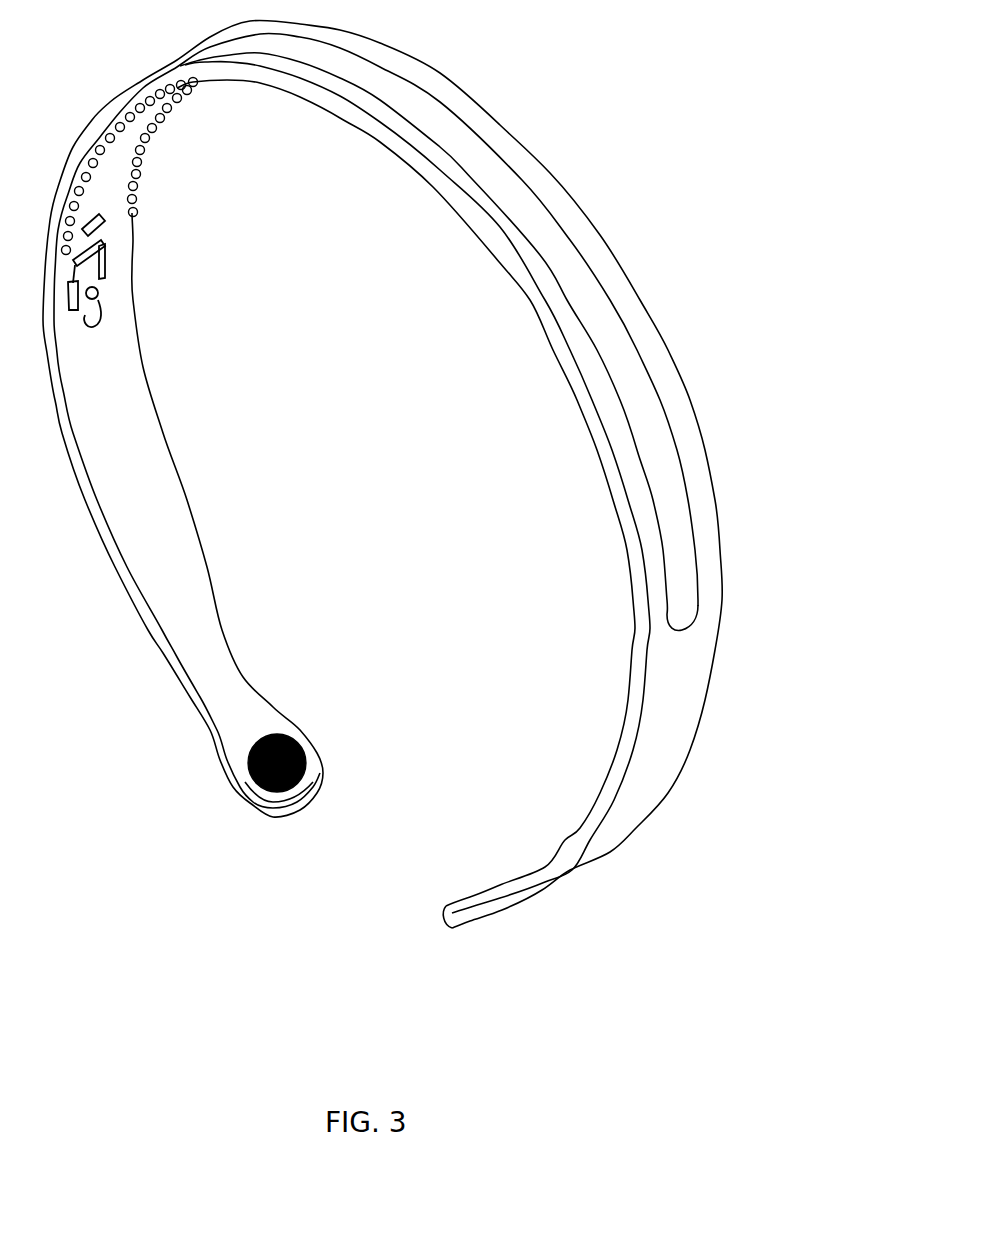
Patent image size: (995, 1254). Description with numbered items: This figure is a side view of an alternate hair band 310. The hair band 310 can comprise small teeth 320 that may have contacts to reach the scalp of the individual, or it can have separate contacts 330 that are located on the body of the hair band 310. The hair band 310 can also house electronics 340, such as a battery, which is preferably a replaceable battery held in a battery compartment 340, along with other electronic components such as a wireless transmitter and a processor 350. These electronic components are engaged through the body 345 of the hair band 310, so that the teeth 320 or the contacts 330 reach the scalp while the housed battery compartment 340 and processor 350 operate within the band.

The hair band 310 is at (575, 879).
The small teeth 320 is at (148, 178).
The contacts 330 is at (245, 772).
The battery compartment 340 is at (113, 286).
The body 345 is at (681, 585).
The processor 350 is at (110, 217).